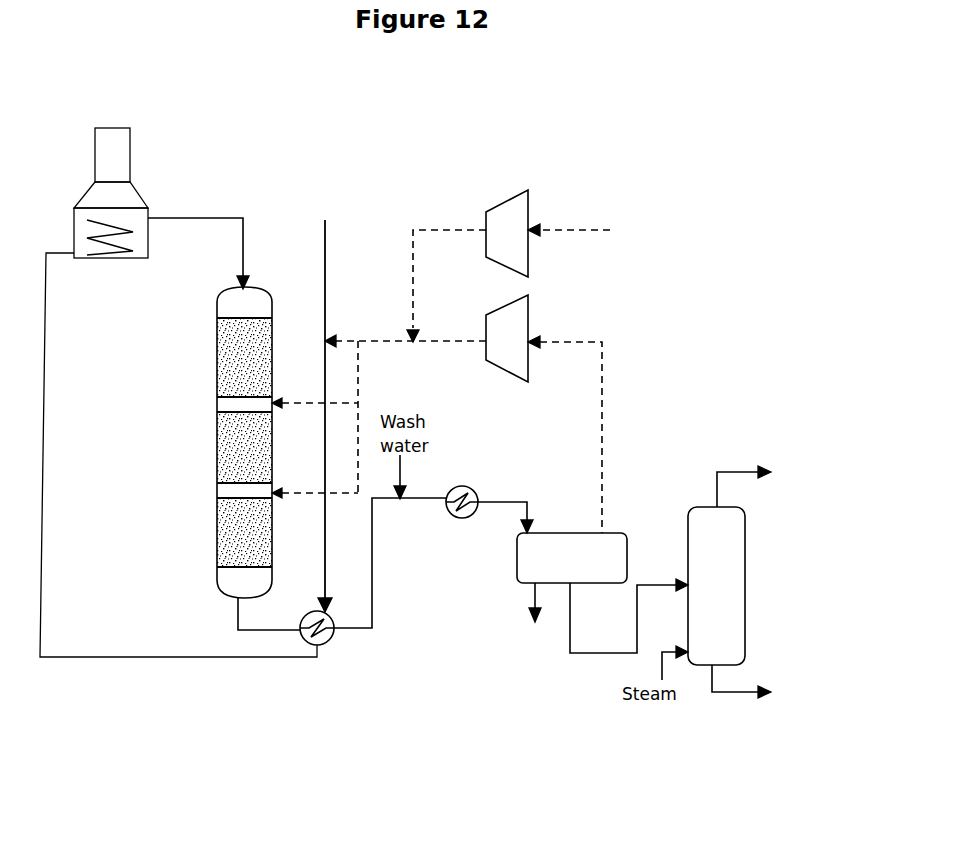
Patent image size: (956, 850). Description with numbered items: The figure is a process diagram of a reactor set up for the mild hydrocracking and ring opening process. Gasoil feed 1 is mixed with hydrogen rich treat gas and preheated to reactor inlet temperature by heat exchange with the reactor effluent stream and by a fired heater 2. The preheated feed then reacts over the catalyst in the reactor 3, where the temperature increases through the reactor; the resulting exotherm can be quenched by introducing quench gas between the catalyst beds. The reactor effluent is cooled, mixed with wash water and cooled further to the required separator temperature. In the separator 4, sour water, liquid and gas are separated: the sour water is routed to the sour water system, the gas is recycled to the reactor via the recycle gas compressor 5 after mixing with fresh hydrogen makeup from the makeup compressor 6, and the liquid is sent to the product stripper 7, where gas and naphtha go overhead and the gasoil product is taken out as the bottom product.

The gasoil feed 1 is at (325, 395).
The fired heater 2 is at (151, 196).
The reactor 3 is at (201, 530).
The separator 4 is at (508, 590).
The recycle gas compressor 5 is at (541, 313).
The makeup compressor 6 is at (544, 201).
The product stripper 7 is at (763, 548).